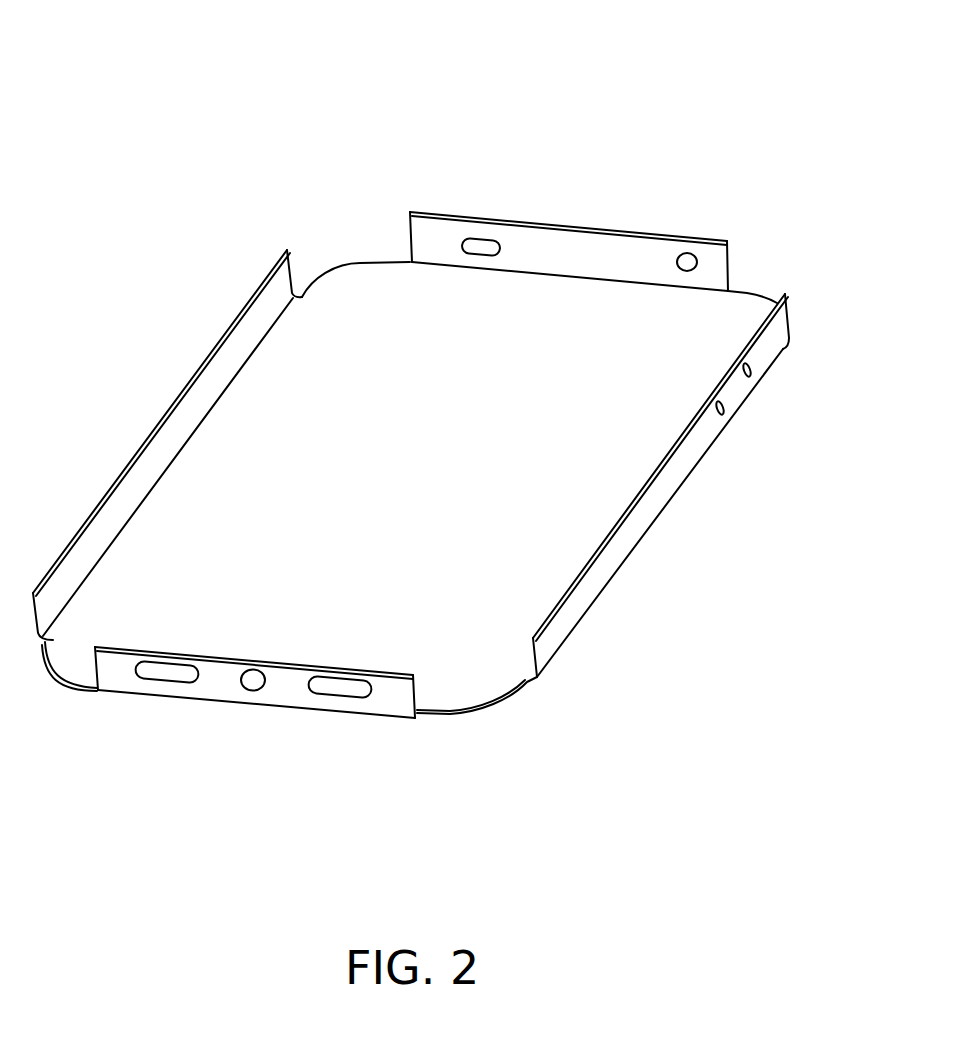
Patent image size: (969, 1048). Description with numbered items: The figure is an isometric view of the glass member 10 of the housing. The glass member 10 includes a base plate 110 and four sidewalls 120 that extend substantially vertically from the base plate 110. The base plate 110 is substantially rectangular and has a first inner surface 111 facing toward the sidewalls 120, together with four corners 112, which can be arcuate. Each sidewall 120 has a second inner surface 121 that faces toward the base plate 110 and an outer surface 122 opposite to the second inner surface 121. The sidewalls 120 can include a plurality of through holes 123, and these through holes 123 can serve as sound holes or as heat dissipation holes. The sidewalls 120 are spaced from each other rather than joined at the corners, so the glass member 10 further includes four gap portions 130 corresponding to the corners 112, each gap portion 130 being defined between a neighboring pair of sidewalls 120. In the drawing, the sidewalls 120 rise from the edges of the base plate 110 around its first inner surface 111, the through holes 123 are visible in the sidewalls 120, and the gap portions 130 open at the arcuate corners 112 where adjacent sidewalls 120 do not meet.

The glass member 10 is at (352, 68).
The base plate 110 is at (442, 715).
The first inner surface 111 is at (478, 655).
The corners 112 is at (748, 292).
The sidewalls 120 is at (122, 675).
The second inner surface 121 is at (140, 475).
The outer surface 122 is at (288, 688).
The through holes 123 is at (477, 246).
The gap portions 130 is at (772, 276).